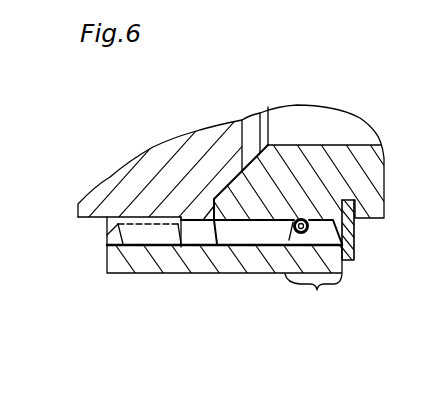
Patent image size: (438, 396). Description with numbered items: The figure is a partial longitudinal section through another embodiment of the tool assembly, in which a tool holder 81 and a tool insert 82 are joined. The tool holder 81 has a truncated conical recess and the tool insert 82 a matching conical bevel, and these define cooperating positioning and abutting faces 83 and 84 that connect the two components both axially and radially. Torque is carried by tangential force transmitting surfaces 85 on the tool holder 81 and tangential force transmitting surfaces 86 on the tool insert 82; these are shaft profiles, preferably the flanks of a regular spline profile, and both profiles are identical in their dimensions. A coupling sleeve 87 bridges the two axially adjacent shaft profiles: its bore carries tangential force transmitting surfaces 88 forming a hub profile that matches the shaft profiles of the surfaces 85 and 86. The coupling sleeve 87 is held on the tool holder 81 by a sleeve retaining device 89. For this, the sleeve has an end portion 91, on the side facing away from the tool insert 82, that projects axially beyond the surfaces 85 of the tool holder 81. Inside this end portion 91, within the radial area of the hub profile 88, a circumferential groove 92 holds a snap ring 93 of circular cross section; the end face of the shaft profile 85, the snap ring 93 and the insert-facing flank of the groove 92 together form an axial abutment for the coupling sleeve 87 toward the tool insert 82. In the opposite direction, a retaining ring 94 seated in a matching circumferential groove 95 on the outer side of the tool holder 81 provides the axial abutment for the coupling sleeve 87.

The tool holder 81 is at (327, 162).
The tool insert 82 is at (202, 150).
The positioning and abutting face 83 is at (242, 122).
The positioning and abutting face 84 is at (240, 183).
The tangential force transmitting surface 85 is at (214, 252).
The tangential force transmitting surface 86 is at (181, 249).
The coupling sleeve 87 is at (133, 262).
The tangential force transmitting surface 88 is at (98, 238).
The sleeve retaining device 89 is at (339, 307).
The end portion 91 is at (317, 290).
The circumferential groove 92 is at (313, 224).
The snap ring 93 is at (343, 263).
The retaining ring 94 is at (350, 244).
The circumferential groove 95 is at (355, 205).